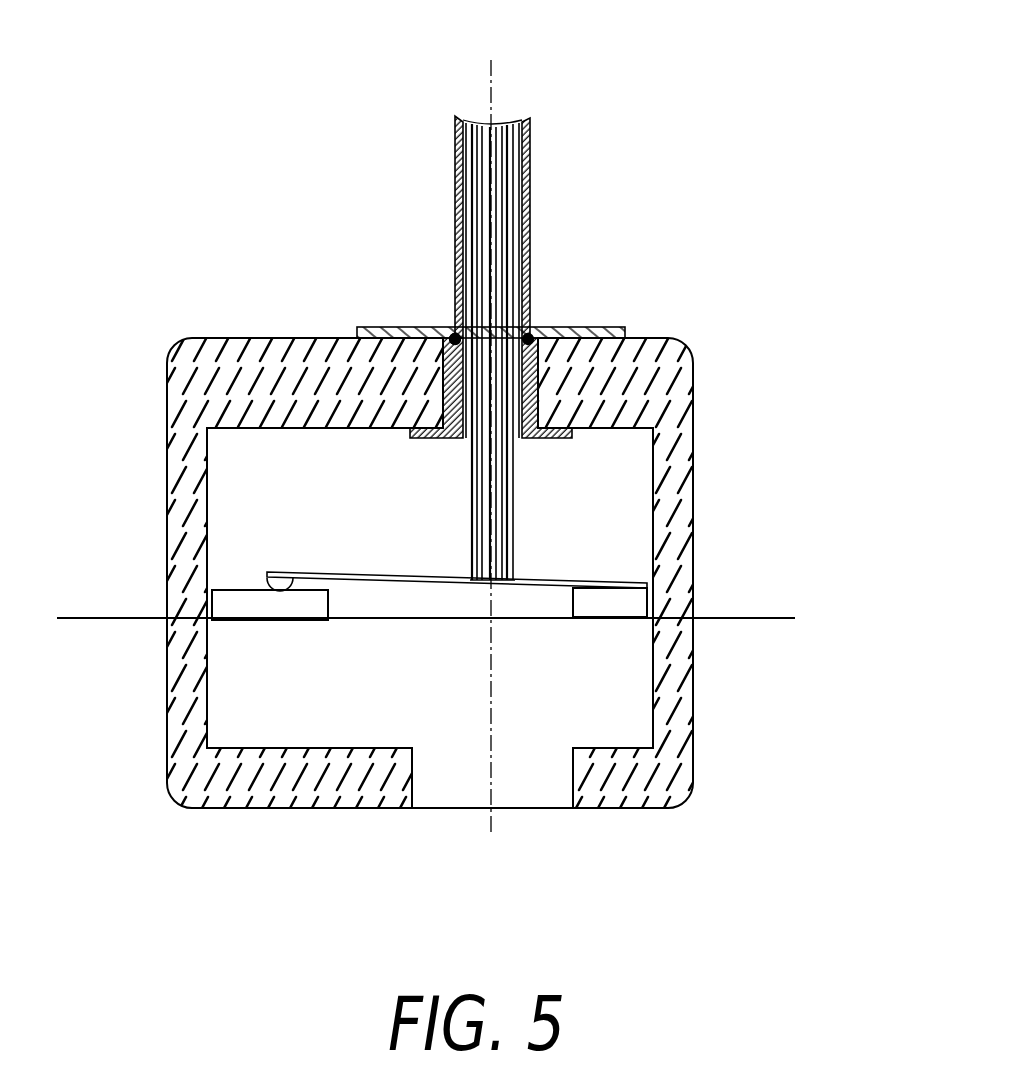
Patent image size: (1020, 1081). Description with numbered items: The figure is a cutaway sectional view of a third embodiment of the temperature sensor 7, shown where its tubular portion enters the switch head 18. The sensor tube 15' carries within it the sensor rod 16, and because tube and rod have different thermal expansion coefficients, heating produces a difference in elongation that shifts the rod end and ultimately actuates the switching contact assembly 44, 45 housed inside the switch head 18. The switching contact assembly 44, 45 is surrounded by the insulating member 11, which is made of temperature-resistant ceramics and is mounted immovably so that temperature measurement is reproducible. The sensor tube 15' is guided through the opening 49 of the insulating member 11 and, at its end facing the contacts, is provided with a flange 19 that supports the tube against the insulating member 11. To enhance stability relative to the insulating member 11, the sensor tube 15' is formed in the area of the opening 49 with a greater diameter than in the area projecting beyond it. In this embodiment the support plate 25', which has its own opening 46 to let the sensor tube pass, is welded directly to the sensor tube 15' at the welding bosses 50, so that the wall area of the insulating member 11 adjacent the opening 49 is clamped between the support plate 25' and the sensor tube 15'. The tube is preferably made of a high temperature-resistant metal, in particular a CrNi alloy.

The temperature sensor 7 is at (557, 185).
The sensor tube 15' is at (591, 173).
The welding bosses 50 is at (456, 337).
The support plate 25' is at (595, 266).
The opening 46 is at (452, 336).
The opening 49 is at (533, 405).
The flange 19 is at (570, 433).
The insulating member 11 is at (680, 449).
The sensor rod 16 is at (505, 545).
The switching contact assembly 44 is at (265, 578).
The switching contact assembly 45 is at (247, 607).
The switch head 18 is at (710, 788).